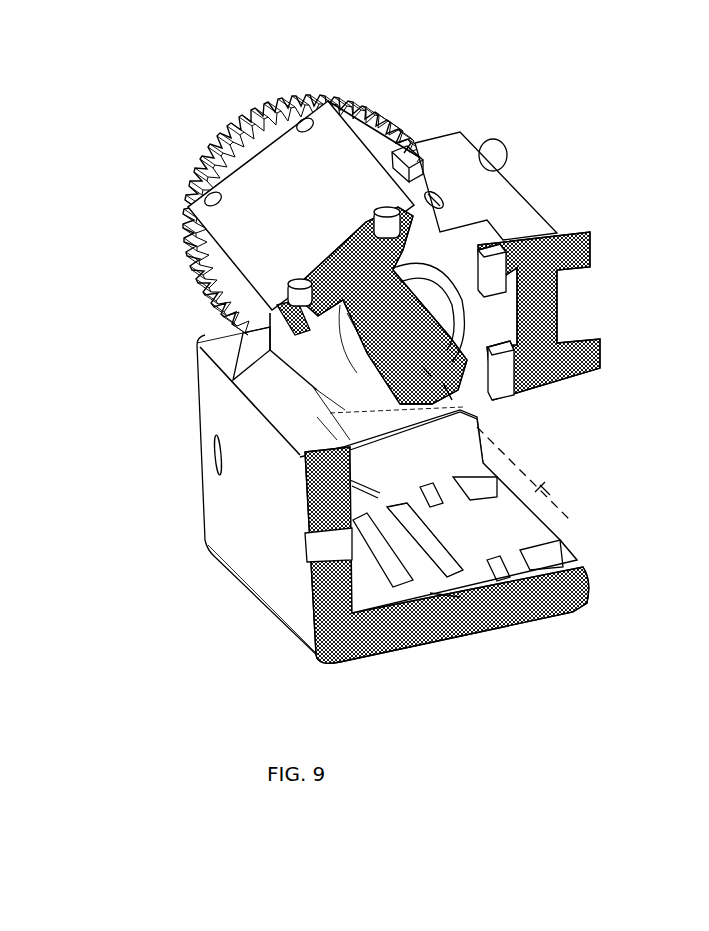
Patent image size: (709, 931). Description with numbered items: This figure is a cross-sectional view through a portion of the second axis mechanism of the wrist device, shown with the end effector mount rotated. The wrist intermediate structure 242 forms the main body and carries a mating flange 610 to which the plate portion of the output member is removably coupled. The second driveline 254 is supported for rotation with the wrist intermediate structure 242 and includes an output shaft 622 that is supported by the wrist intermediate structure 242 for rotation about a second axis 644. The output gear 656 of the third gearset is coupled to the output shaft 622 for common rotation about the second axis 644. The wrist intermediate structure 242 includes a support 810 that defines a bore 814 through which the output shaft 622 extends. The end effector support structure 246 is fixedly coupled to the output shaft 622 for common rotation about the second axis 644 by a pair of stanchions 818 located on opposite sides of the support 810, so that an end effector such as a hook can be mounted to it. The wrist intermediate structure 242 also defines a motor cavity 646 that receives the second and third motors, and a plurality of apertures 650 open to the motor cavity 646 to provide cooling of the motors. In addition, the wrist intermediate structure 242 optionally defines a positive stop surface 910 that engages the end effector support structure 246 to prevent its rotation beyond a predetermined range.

The wrist intermediate structure 242 is at (404, 520).
The end effector support structure 246 is at (254, 192).
The second driveline 254 is at (233, 215).
The mating flange 610 is at (560, 317).
The output shaft 622 is at (386, 378).
The second axis 644 is at (543, 490).
The motor cavity 646 is at (493, 543).
The apertures 650 is at (457, 577).
The output gear 656 is at (177, 209).
The support 810 is at (330, 350).
The bore 814 is at (420, 273).
The stanchions 818 is at (390, 293).
The positive stop surface 910 is at (227, 360).